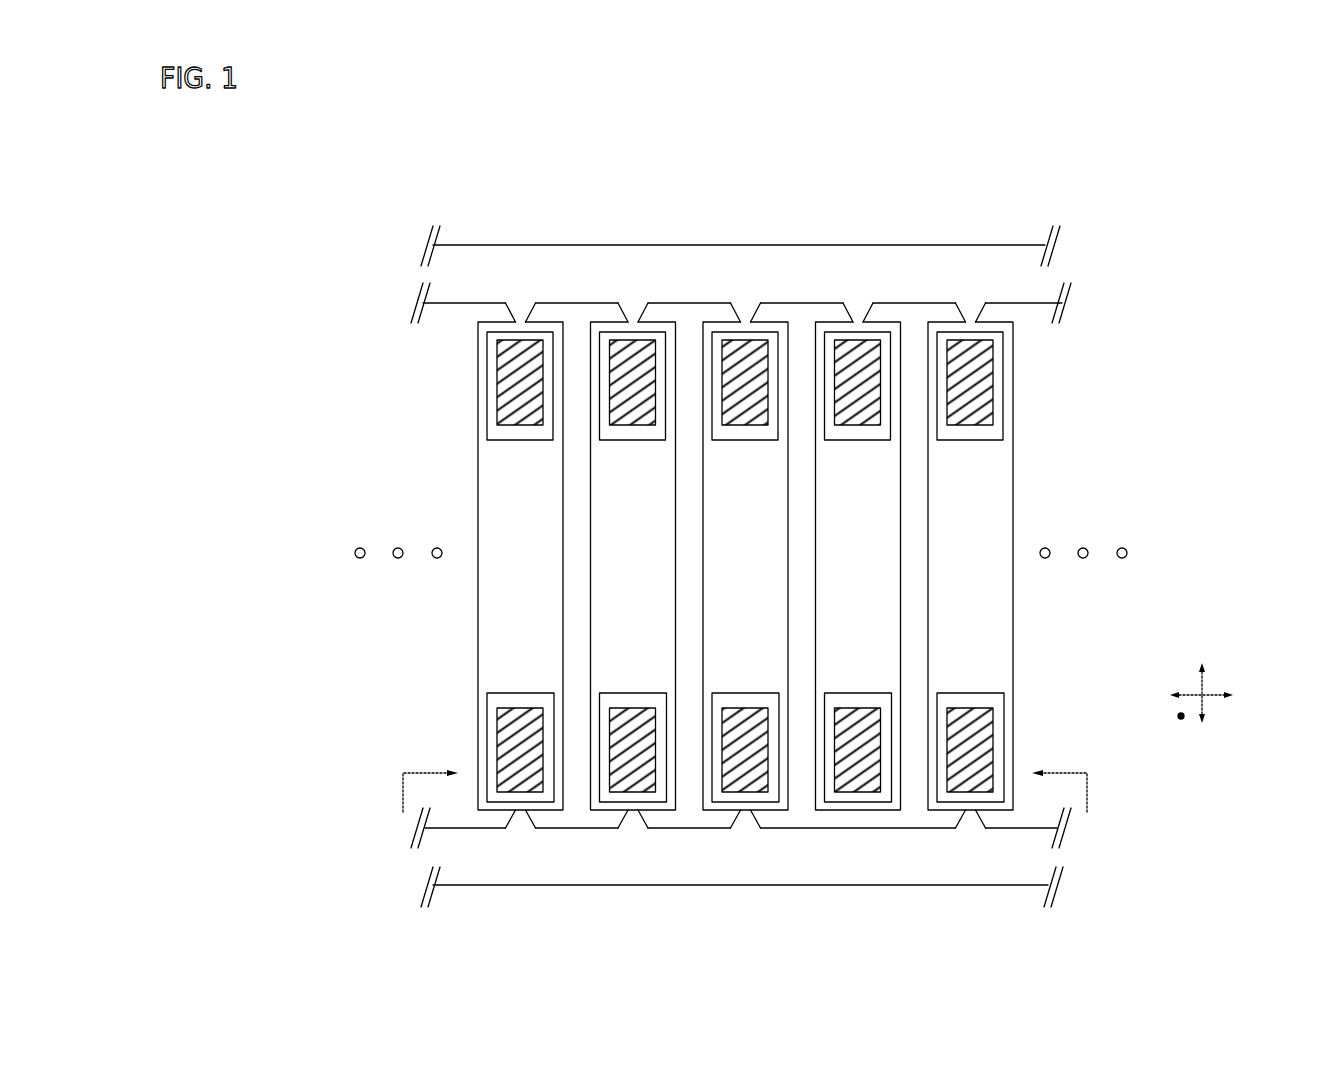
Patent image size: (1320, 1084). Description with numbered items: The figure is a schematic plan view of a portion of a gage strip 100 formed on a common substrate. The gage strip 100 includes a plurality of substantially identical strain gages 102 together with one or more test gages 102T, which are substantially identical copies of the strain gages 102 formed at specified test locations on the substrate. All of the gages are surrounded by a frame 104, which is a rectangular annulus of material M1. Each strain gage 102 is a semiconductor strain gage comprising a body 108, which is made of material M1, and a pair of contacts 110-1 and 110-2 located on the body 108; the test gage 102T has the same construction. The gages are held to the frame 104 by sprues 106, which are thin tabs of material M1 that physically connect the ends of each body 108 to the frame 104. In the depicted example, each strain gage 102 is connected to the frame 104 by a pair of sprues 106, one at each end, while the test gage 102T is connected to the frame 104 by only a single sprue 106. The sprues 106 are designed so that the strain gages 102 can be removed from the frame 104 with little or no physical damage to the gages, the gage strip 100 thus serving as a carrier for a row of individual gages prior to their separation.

The gage strip 100 is at (730, 567).
The strain gage 102 is at (656, 566).
The test gage 102T is at (825, 616).
The frame 104 is at (805, 267).
The sprue 106 is at (520, 300).
The body 108 is at (431, 566).
The first contact 110-1 is at (458, 400).
The second contact 110-2 is at (448, 736).
The material M1 is at (518, 661).